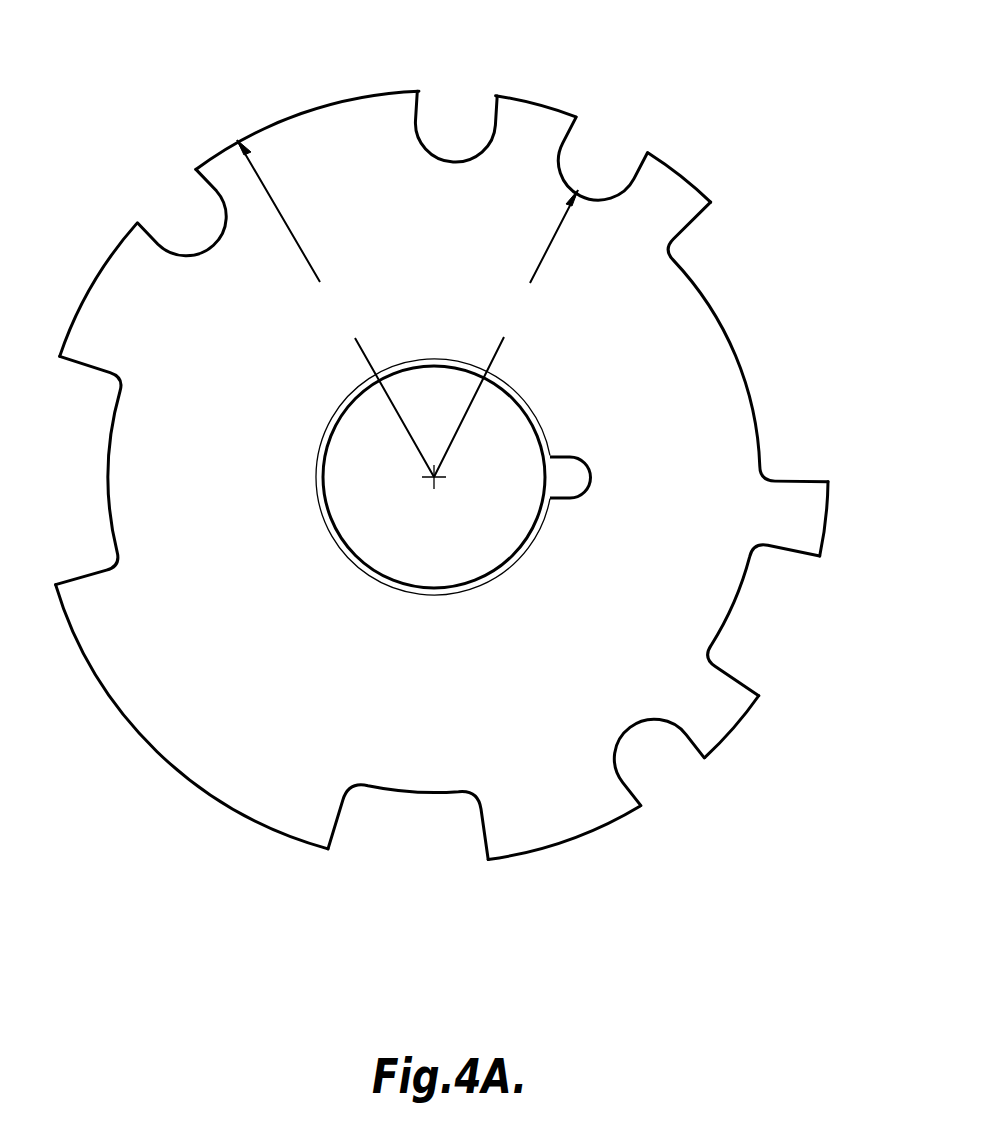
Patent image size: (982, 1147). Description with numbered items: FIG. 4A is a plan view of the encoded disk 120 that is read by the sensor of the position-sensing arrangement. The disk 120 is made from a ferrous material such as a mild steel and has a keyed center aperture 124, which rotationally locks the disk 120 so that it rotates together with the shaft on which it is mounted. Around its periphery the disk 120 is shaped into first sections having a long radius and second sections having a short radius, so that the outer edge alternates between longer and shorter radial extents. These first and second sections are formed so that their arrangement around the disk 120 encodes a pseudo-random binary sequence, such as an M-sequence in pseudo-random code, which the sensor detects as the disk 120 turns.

The encoded disk 120 is at (460, 465).
The keyed center aperture 124 is at (325, 468).